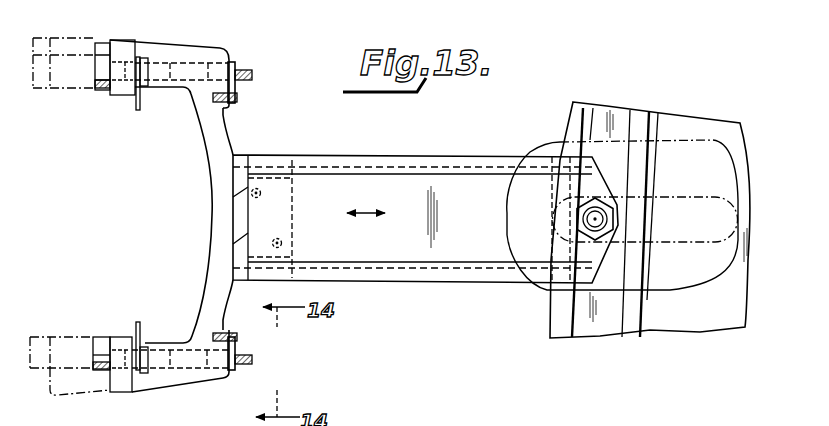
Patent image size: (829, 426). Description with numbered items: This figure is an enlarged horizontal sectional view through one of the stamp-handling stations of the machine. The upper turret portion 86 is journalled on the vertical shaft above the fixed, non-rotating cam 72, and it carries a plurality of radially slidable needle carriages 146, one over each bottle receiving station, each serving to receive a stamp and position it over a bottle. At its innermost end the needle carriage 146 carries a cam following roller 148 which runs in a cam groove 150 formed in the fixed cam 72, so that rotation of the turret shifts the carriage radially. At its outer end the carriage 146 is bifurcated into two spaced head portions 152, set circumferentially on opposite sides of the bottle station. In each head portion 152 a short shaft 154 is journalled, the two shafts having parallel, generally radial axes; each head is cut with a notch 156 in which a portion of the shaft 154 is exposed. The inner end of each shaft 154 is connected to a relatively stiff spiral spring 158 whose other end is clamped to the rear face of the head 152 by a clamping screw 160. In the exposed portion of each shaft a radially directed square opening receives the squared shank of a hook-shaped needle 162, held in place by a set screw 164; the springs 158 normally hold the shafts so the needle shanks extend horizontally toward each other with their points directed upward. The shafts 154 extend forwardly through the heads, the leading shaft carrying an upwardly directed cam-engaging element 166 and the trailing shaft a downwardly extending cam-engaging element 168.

The cam 72 is at (667, 120).
The upper turret portion 86 is at (703, 150).
The needle carriage 146 is at (400, 281).
The cam following roller 148 is at (572, 195).
The cam groove 150 is at (596, 122).
The head portion 152 is at (161, 45).
The short shaft 154 is at (246, 70).
The notch 156 is at (147, 86).
The spiral spring 158 is at (231, 62).
The clamping screw 160 is at (238, 97).
The hook-shaped needle 162 is at (136, 97).
The set screw 164 is at (140, 57).
The cam-engaging element 166 is at (96, 80).
The cam-engaging element 168 is at (97, 352).